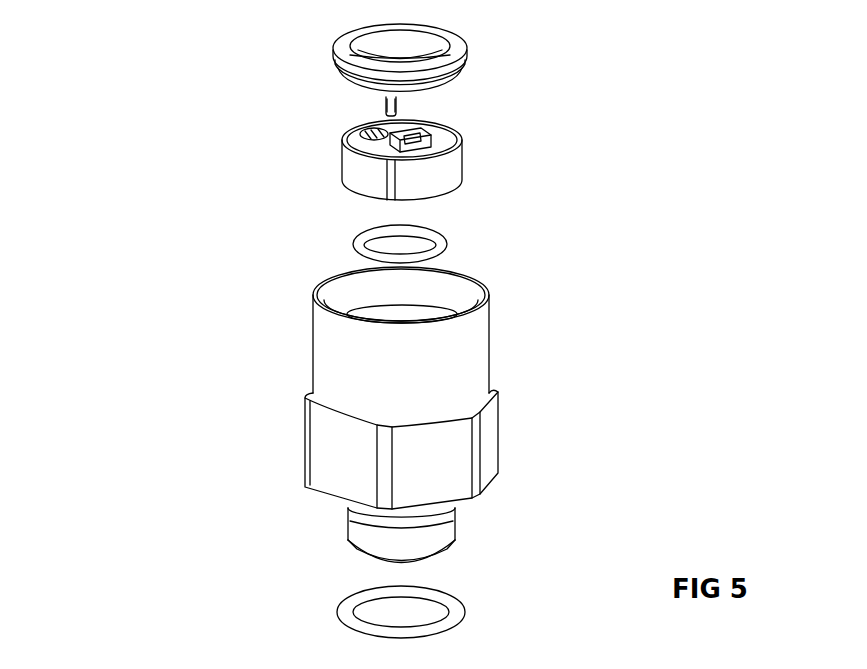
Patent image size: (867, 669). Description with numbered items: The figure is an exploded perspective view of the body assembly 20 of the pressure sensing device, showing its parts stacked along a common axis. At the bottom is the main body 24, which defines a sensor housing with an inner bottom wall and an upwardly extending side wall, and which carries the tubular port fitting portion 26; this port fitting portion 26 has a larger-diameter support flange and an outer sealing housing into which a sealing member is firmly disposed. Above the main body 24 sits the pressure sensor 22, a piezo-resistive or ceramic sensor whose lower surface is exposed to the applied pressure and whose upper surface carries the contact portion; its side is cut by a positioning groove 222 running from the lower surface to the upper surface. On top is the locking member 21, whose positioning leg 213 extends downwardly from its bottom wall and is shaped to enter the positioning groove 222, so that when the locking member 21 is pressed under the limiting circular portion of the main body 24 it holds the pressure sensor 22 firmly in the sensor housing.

The body assembly 20 is at (150, 221).
The locking member 21 is at (460, 75).
The positioning leg 213 is at (389, 107).
The pressure sensor 22 is at (485, 150).
The positioning groove 222 is at (386, 196).
The main body 24 is at (511, 396).
The tubular port fitting portion 26 is at (366, 533).